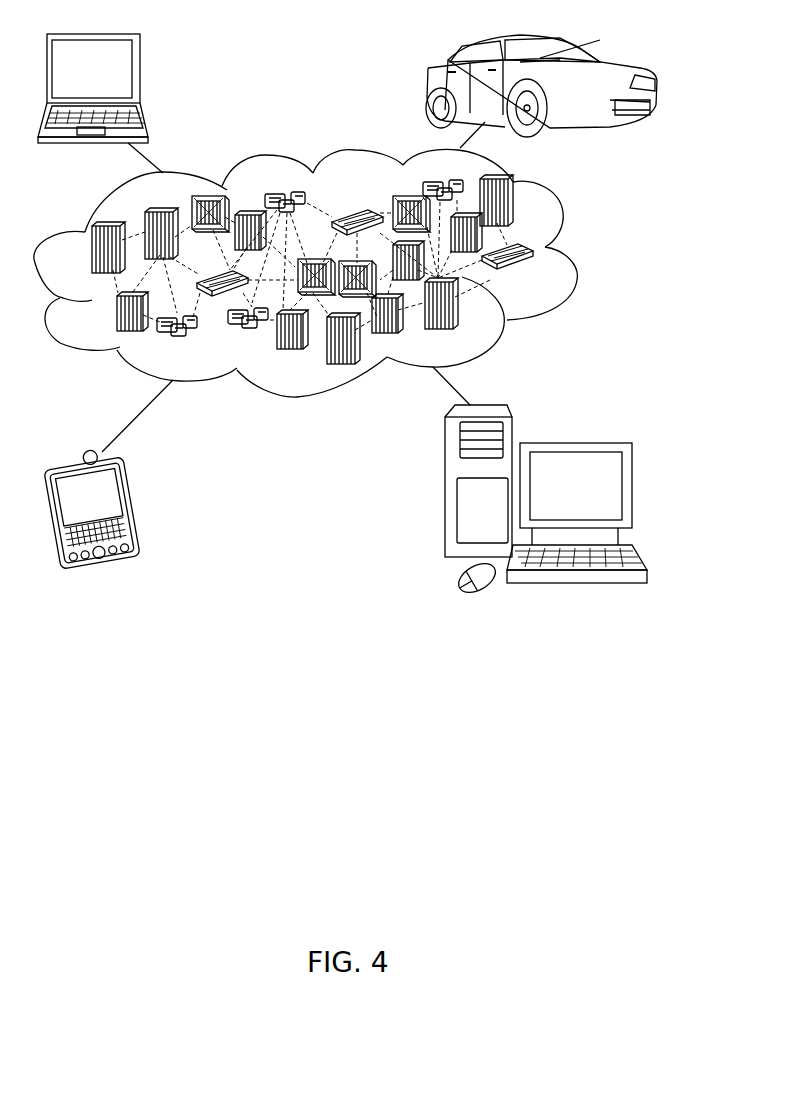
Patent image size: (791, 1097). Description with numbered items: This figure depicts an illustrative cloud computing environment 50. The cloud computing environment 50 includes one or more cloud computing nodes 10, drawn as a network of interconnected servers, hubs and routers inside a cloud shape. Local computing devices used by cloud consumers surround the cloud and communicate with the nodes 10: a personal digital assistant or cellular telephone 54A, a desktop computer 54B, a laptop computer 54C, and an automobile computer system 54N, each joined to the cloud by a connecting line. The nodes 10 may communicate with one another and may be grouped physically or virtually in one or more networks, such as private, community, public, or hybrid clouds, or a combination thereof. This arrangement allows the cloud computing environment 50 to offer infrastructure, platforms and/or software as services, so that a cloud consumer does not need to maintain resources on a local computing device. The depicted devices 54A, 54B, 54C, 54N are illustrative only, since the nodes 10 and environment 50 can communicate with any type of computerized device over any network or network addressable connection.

The cloud computing nodes 10 is at (323, 273).
The cloud computing environment 50 is at (573, 253).
The personal digital assistant or cellular telephone 54A is at (133, 505).
The desktop computer 54B is at (574, 443).
The laptop computer 54C is at (140, 72).
The automobile computer system 54N is at (430, 84).